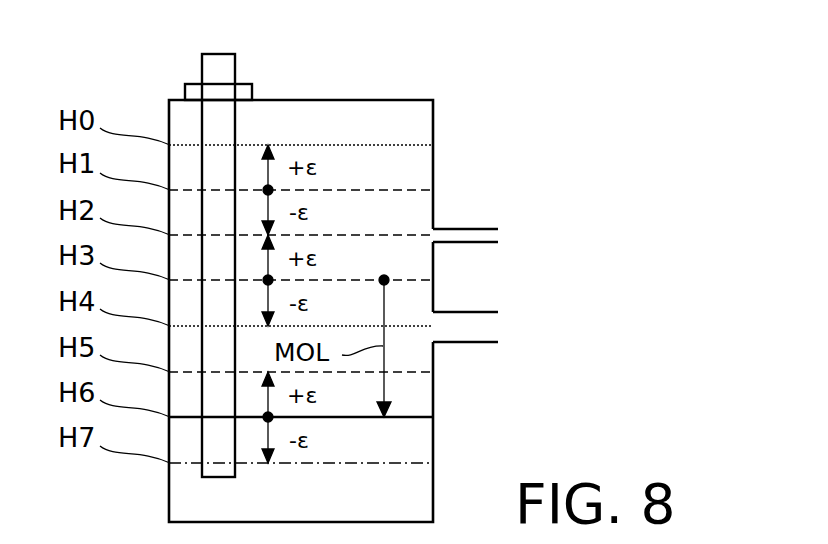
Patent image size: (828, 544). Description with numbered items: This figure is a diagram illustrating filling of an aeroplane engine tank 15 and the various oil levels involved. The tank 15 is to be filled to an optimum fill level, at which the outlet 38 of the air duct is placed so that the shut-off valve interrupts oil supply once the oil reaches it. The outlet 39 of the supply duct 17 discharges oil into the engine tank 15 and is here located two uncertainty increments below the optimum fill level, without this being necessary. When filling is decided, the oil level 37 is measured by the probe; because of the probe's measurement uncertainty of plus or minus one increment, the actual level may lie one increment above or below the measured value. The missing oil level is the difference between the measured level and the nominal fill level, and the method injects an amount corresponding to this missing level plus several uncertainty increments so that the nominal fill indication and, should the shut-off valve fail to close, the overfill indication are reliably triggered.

The engine tank 15 is at (401, 99).
The supply duct 17 is at (474, 342).
The oil level 37 is at (405, 416).
The outlet of the air duct 38 is at (435, 228).
The outlet of the supply duct 39 is at (435, 311).